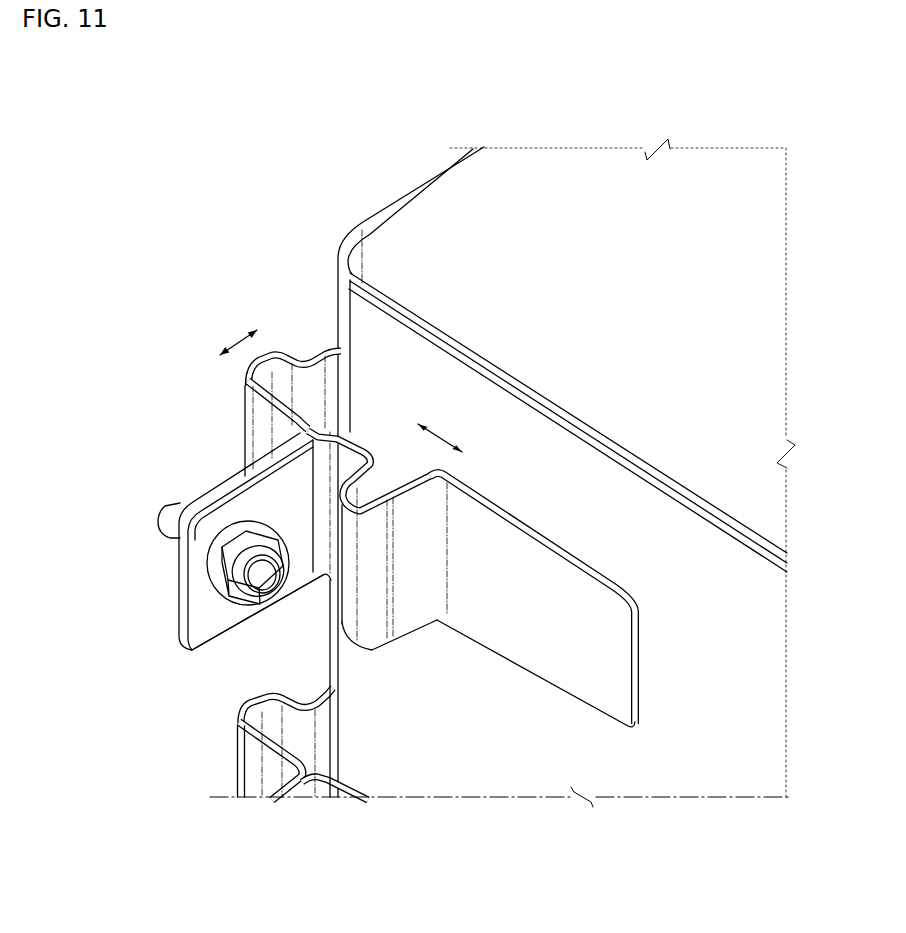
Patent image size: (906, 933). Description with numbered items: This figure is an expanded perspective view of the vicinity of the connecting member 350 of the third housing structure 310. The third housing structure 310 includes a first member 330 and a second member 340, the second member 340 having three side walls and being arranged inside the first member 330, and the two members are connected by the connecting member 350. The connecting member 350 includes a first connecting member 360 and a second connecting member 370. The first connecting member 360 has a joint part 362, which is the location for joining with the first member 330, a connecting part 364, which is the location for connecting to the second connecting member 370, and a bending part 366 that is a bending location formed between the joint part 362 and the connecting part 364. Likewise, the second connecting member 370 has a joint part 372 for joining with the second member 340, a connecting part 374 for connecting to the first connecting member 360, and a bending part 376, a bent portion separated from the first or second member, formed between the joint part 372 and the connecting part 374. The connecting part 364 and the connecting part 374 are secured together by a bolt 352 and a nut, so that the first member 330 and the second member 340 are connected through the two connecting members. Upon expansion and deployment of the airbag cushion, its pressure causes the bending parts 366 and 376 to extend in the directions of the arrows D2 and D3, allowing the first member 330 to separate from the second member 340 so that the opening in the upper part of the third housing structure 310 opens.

The third housing structure 310 is at (216, 149).
The first member 330 is at (664, 806).
The second member 340 is at (380, 196).
The connecting member 350 is at (186, 668).
The bolt 352 is at (274, 592).
The first connecting member 360 is at (411, 681).
The joint part 362 is at (563, 681).
The connecting part 364 is at (224, 632).
The bending part 366 is at (407, 614).
The second connecting member 370 is at (216, 390).
The joint part 372 is at (337, 351).
The connecting part 374 is at (217, 488).
The bending part 376 is at (287, 348).
The arrow D2 is at (436, 433).
The arrow D3 is at (240, 340).